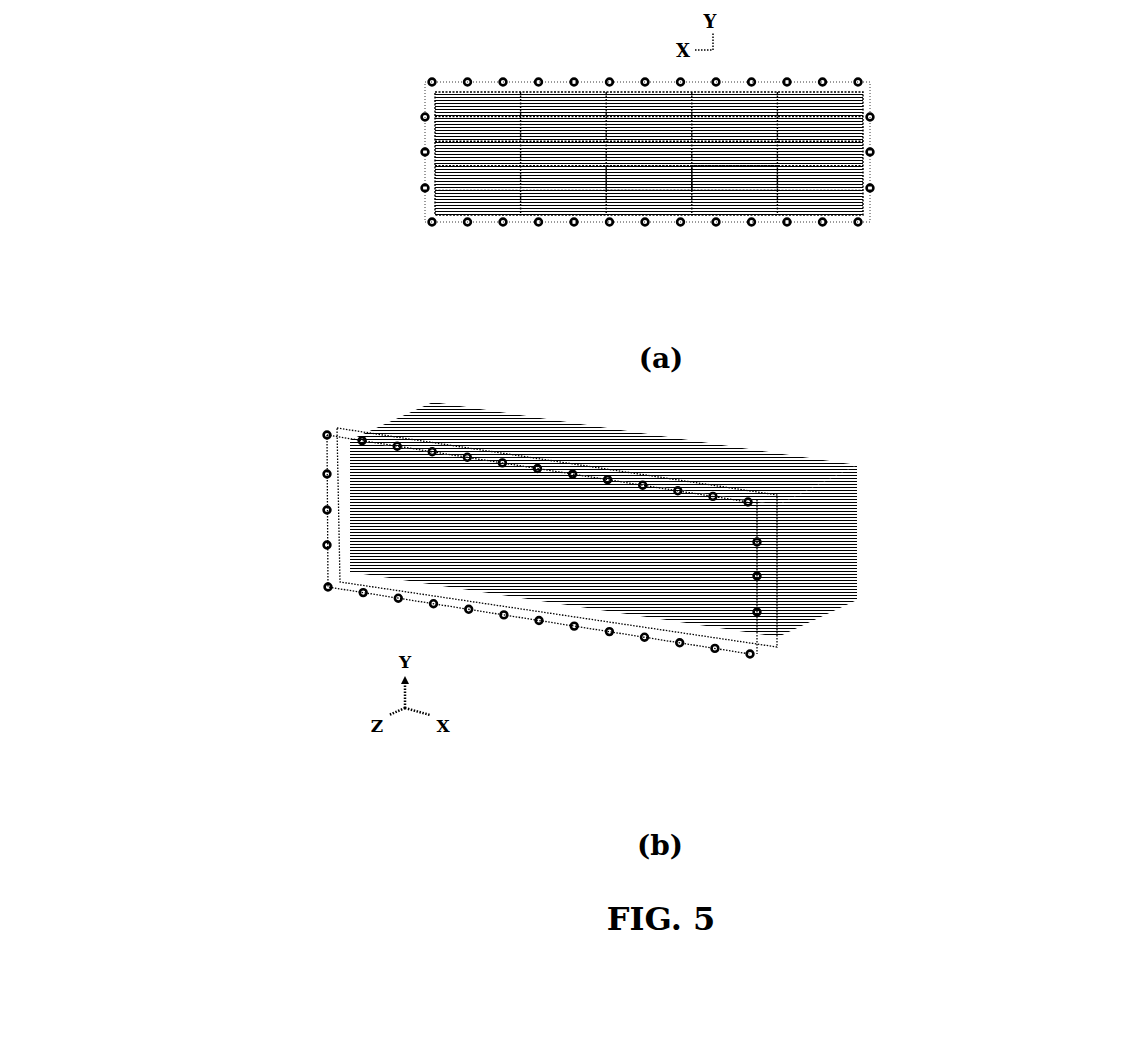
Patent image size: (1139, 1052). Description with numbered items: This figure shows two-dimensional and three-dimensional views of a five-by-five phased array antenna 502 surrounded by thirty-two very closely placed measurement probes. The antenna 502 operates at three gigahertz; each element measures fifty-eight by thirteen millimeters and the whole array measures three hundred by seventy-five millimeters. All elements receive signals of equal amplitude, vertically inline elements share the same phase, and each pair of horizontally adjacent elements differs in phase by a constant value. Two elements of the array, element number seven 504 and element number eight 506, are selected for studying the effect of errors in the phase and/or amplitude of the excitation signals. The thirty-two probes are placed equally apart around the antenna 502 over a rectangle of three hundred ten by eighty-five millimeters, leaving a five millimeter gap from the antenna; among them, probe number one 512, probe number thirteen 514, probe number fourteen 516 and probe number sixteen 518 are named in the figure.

The phase array antenna 502 is at (840, 545).
The element #7 504 is at (752, 180).
The element #8 506 is at (640, 180).
The probe #1 512 is at (866, 229).
The probe #13 514 is at (424, 231).
The probe #14 516 is at (419, 185).
The probe #16 518 is at (419, 113).